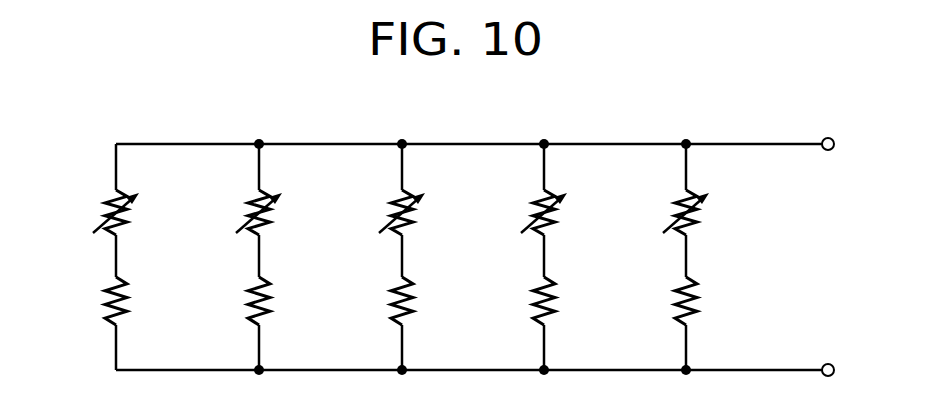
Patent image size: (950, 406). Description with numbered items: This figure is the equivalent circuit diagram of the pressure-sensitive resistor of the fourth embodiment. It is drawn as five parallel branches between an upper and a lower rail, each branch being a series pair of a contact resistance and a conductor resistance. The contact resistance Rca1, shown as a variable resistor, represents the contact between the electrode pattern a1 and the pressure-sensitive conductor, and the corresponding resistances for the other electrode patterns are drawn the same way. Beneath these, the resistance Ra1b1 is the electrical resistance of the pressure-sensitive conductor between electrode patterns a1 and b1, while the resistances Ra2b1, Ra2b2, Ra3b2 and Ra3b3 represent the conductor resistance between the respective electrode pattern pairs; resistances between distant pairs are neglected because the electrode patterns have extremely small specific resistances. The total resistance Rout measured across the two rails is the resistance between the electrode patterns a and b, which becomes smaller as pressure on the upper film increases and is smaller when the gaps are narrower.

The contact resistance Rca1 is at (107, 205).
The electrical resistance of pressure-sensitive conductor Ra1b1 is at (106, 297).
The electrical resistance of pressure-sensitive conductor Ra2b1 is at (253, 297).
The electrical resistance of pressure-sensitive conductor Ra2b2 is at (392, 296).
The electrical resistance of pressure-sensitive conductor Ra3b2 is at (534, 296).
The electrical resistance of pressure-sensitive conductor Ra3b3 is at (677, 297).
The resistance between electrode patterns a and b Rout is at (828, 150).